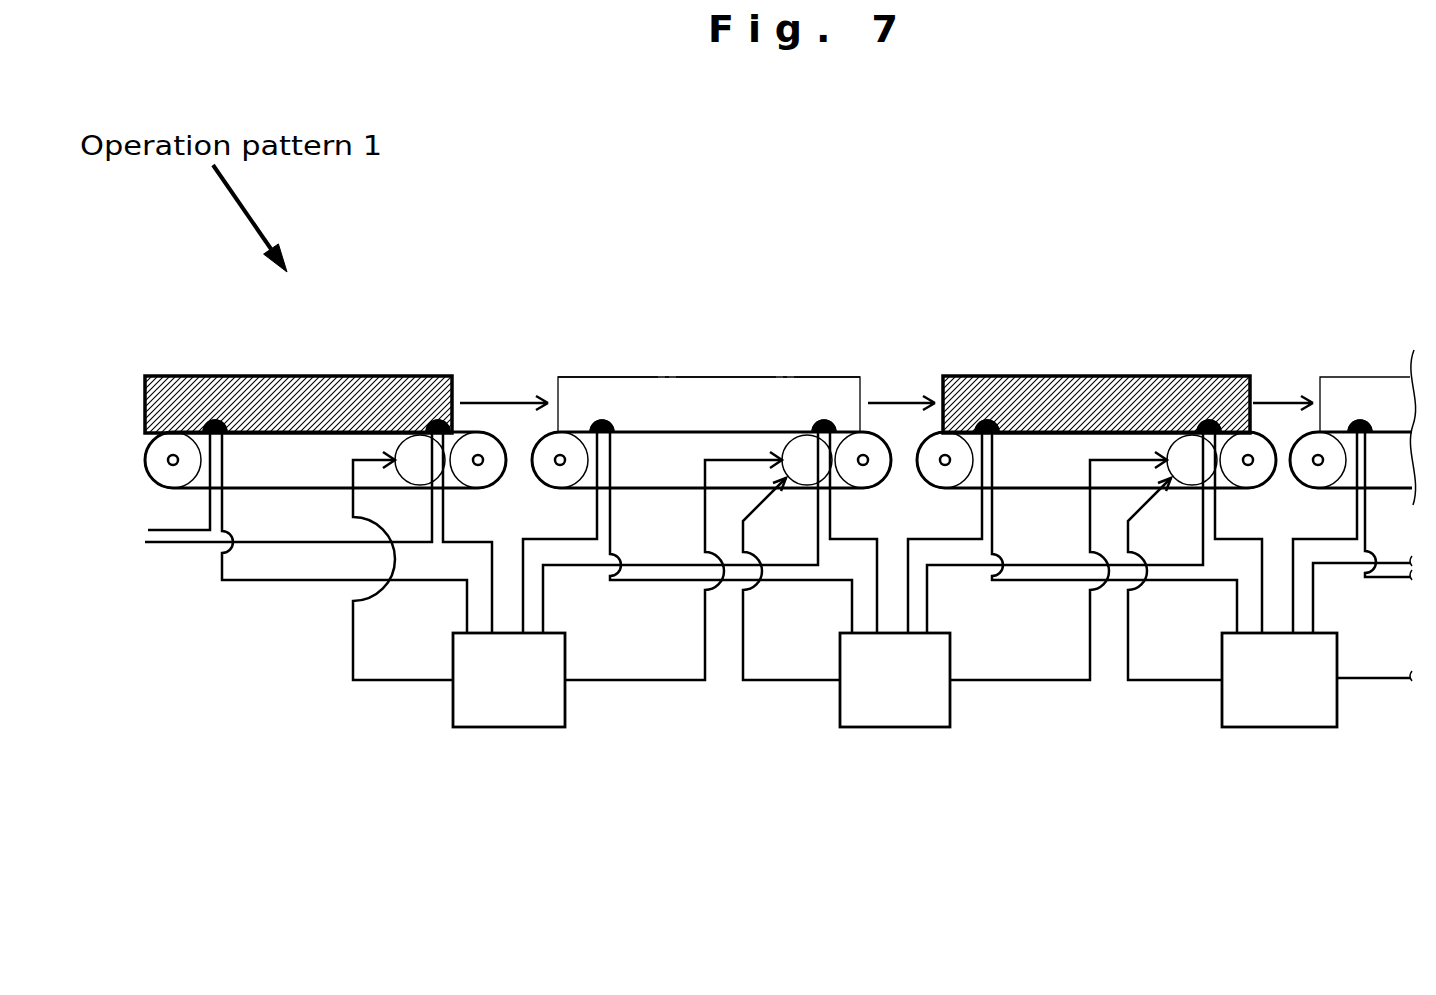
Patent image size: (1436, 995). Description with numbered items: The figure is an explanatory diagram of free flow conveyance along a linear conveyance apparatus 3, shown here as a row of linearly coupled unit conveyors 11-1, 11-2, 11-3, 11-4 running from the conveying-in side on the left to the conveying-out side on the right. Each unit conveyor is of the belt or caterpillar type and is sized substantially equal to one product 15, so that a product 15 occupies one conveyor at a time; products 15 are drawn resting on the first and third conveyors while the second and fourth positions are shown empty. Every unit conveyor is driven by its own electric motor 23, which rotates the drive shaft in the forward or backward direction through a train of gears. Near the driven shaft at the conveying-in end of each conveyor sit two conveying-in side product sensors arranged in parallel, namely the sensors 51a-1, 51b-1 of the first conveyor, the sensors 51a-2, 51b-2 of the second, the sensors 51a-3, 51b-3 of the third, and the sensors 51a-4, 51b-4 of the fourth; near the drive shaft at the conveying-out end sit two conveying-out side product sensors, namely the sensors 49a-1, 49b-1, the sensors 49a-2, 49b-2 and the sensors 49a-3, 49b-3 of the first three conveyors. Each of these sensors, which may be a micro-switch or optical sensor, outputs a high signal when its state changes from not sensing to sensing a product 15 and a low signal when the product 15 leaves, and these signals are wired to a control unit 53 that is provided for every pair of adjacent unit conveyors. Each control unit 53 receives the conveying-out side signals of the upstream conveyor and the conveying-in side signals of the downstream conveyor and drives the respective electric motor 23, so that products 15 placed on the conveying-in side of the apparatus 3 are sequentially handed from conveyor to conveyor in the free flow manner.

The linear conveyance apparatus 3 is at (729, 724).
The unit conveyor 11-1 is at (280, 490).
The unit conveyor 11-2 is at (668, 490).
The unit conveyor 11-3 is at (1058, 490).
The unit conveyor 11-4 is at (1398, 488).
The product 15 is at (327, 385).
The electric motor 23 is at (417, 462).
The conveying-out side product sensor 49a-1 is at (437, 428).
The conveying-out side product sensor 49b-1 is at (424, 372).
The conveying-out side product sensor 49a-2 is at (823, 428).
The conveying-out side product sensor 49b-2 is at (810, 372).
The conveying-out side product sensor 49a-3 is at (1207, 428).
The conveying-out side product sensor 49b-3 is at (1190, 372).
The conveying-in side product sensor 51a-1 is at (214, 428).
The conveying-in side product sensor 51b-1 is at (190, 377).
The conveying-in side product sensor 51a-2 is at (601, 428).
The conveying-in side product sensor 51b-2 is at (573, 376).
The conveying-in side product sensor 51a-3 is at (985, 428).
The conveying-in side product sensor 51b-3 is at (969, 376).
The conveying-in side product sensor 51a-4 is at (1358, 428).
The conveying-in side product sensor 51b-4 is at (1347, 376).
The control unit 53 is at (500, 713).